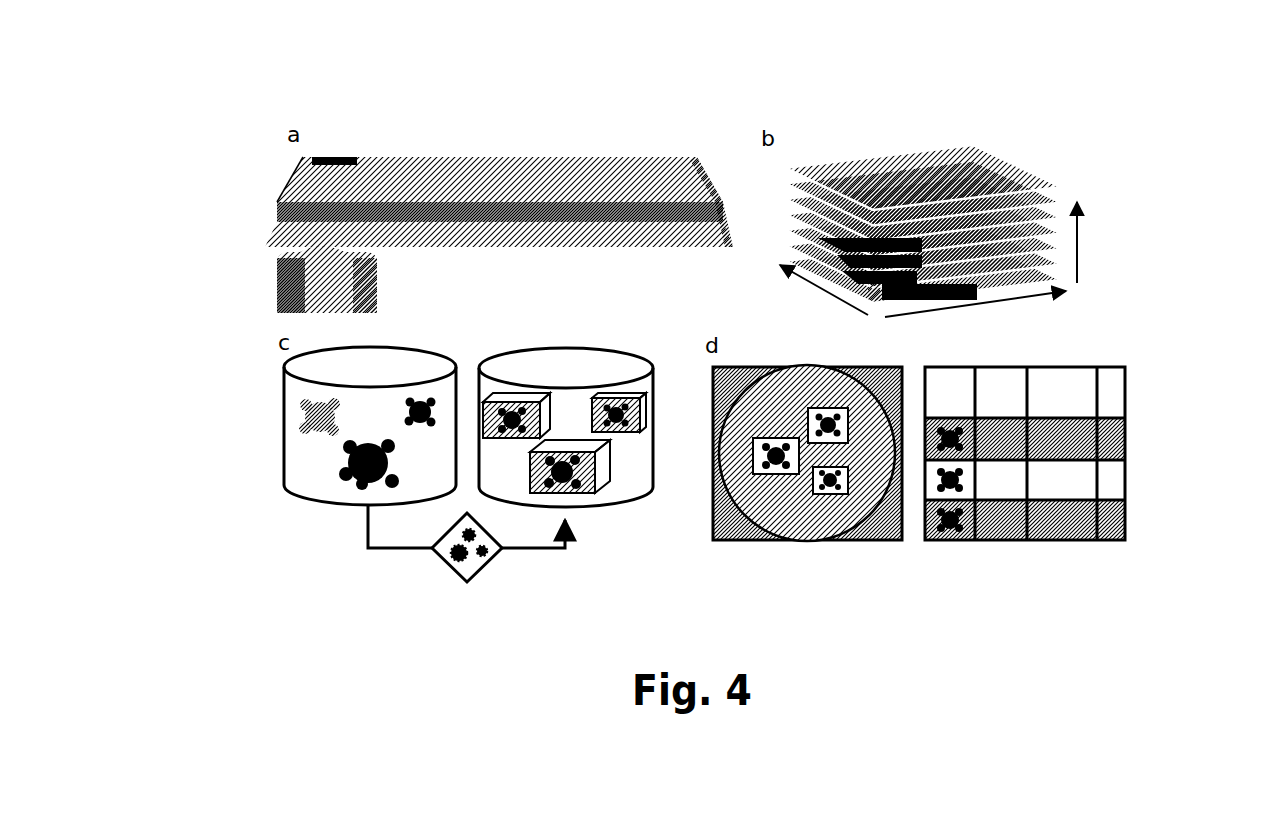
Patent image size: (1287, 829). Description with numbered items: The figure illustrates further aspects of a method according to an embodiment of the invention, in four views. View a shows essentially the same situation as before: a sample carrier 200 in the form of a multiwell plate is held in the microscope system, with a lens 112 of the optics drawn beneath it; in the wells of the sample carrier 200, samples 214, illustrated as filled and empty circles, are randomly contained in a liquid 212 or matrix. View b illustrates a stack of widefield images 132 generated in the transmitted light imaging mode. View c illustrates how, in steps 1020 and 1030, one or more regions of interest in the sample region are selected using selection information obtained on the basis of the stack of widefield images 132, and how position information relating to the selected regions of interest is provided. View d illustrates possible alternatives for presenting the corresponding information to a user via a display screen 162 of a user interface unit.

The lens 112 is at (275, 283).
The stack of widefield images 132 is at (1037, 178).
The display screen 162 is at (1142, 458).
The sample carrier 200 is at (692, 238).
The liquid 212 is at (351, 157).
The samples 214 is at (307, 423).
The step 1020 is at (465, 578).
The step 1030 is at (463, 586).